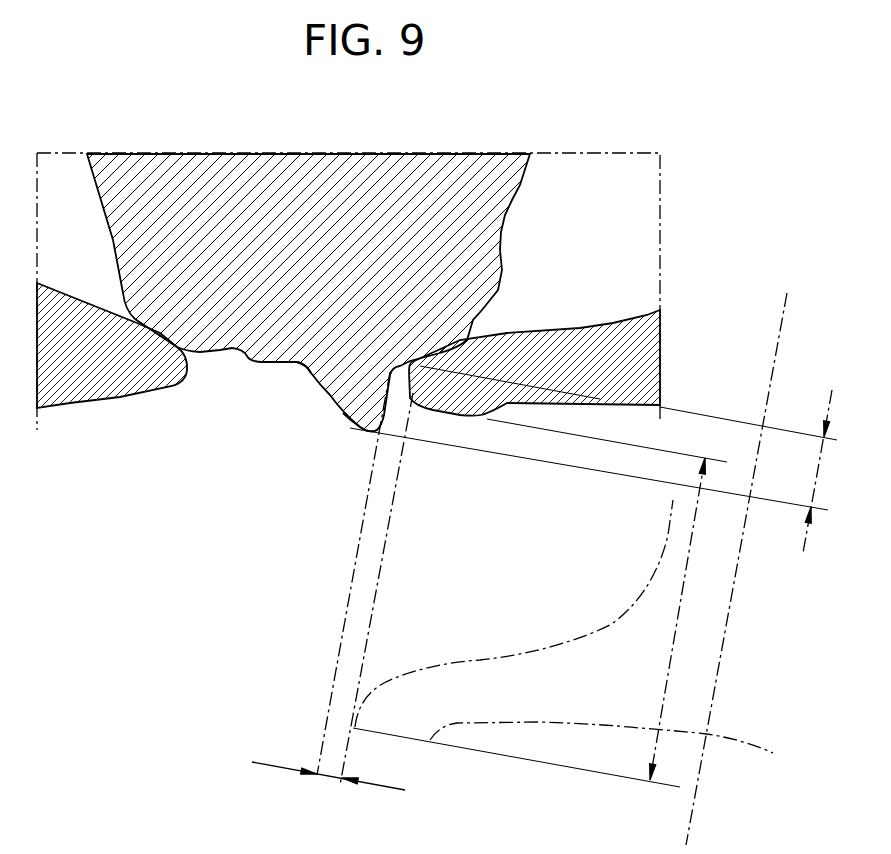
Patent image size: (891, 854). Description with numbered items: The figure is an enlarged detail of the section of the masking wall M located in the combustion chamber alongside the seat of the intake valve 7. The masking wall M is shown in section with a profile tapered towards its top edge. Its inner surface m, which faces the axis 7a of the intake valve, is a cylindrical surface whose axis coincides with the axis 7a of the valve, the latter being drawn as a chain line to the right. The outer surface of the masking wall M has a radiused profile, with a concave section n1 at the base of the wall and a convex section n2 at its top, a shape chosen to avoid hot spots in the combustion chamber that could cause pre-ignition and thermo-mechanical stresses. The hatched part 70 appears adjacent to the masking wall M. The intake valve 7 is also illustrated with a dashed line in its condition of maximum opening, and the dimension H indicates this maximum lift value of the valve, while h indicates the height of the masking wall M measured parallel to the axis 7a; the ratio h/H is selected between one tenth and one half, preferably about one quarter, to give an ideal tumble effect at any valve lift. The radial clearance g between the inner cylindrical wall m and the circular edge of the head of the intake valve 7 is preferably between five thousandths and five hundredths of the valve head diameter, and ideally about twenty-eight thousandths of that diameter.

The intake valve 7 is at (549, 320).
The axis of the intake valve 7a is at (777, 357).
The adjacent member 70 is at (121, 405).
The masking wall M is at (320, 412).
The concave section n1 is at (300, 365).
The convex section n2 is at (358, 427).
The inner surface m is at (400, 437).
The maximum lift value of the intake valve H is at (685, 580).
The height of the masking wall h is at (816, 487).
The radial clearance g is at (330, 775).